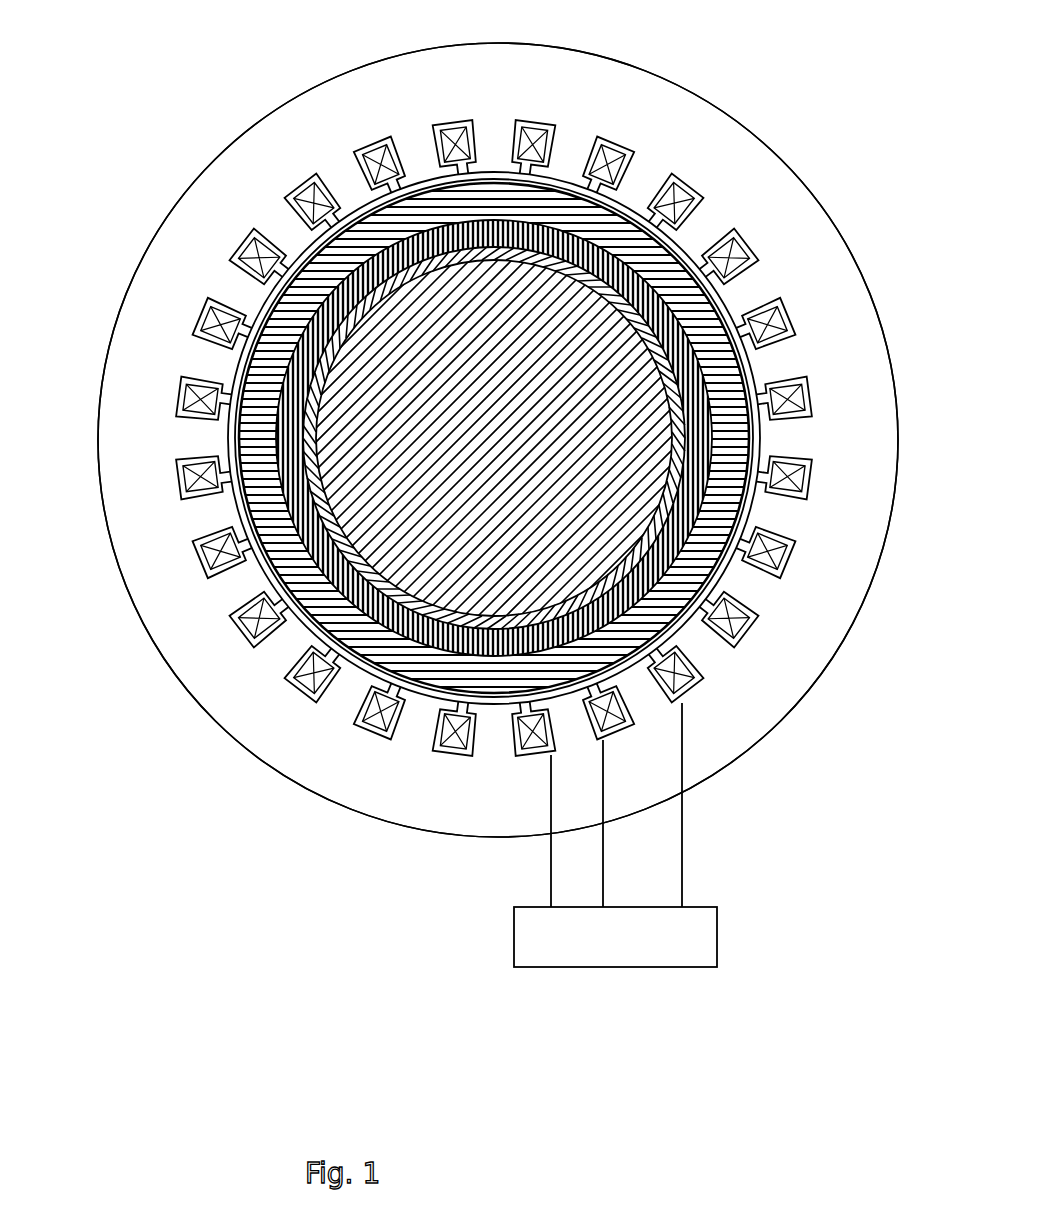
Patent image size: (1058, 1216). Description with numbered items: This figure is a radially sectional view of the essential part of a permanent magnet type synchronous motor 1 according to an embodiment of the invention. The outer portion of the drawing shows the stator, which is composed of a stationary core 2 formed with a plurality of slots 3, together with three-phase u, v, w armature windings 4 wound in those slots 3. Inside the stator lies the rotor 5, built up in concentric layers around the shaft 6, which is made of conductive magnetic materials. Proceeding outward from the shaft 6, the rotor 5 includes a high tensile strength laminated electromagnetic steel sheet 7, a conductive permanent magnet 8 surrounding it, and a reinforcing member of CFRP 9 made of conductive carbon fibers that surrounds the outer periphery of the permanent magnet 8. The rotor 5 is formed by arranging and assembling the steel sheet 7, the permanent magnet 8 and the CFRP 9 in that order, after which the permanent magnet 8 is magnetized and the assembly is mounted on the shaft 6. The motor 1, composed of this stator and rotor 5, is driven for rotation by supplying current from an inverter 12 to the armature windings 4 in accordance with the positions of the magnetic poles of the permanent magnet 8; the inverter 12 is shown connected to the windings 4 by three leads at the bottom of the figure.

The permanent magnet type synchronous motor 1 is at (733, 107).
The stationary core 2 is at (763, 193).
The slots 3 is at (605, 150).
The armature windings 4 is at (528, 135).
The rotor 5 is at (508, 520).
The shaft 6 is at (382, 515).
The high tensile strength laminated electromagnetic steel sheet 7 is at (345, 575).
The permanent magnet 8 is at (295, 540).
The CFRP reinforcing member 9 is at (248, 487).
The inverter 12 is at (688, 948).